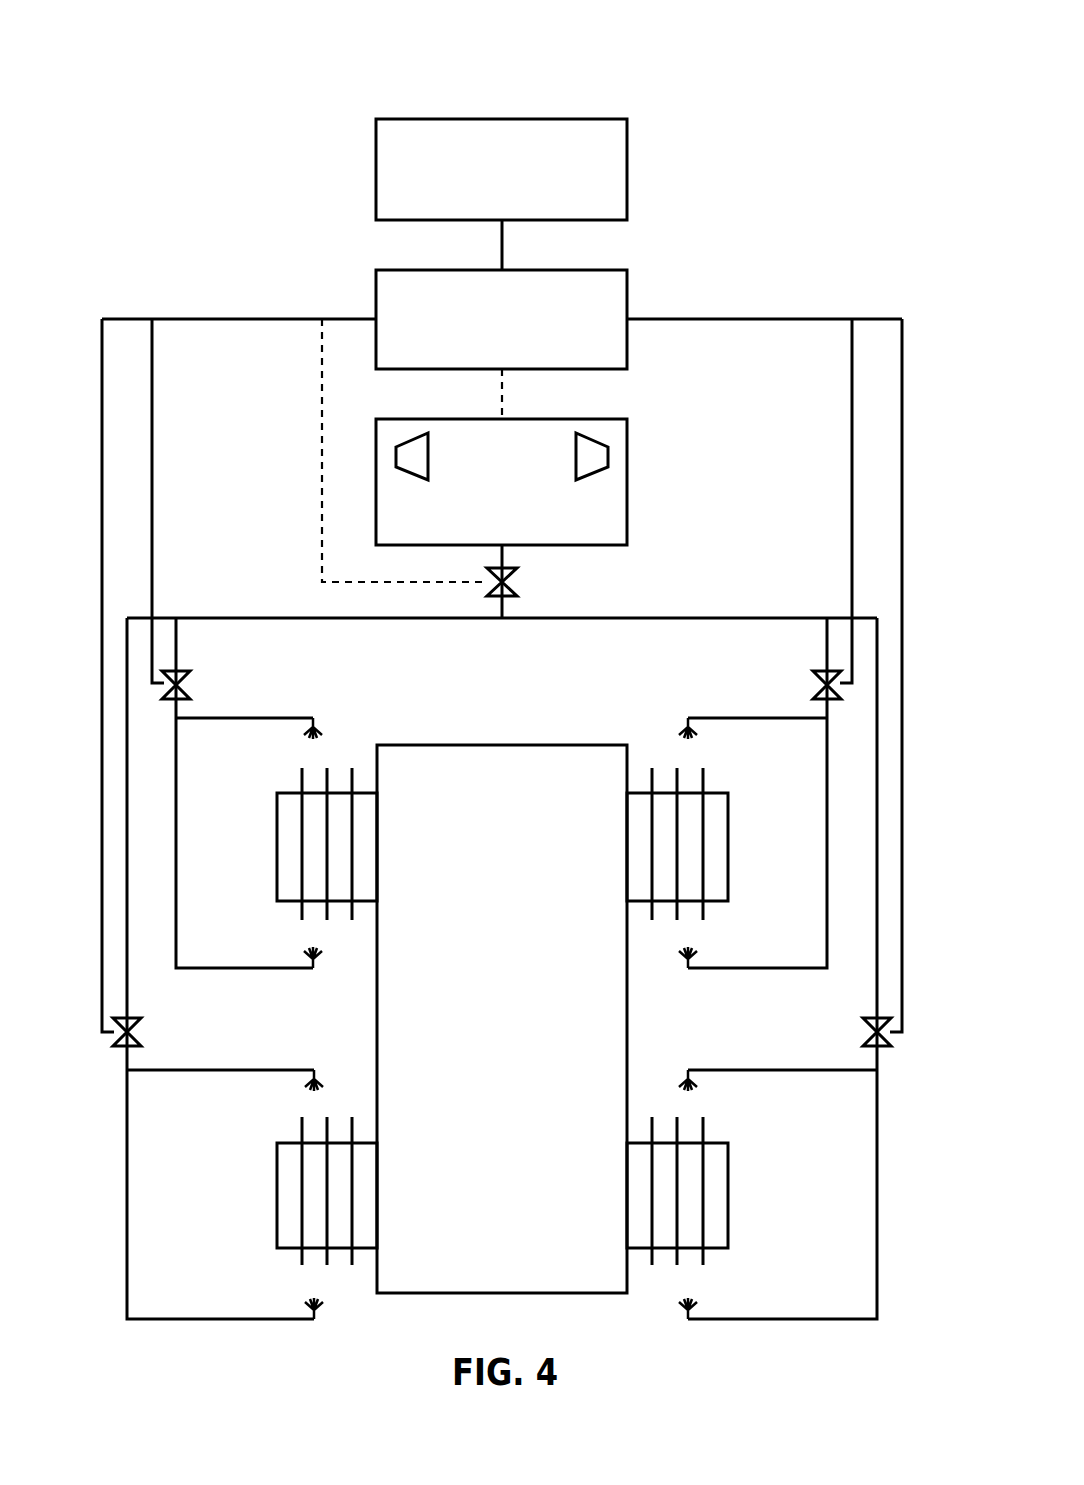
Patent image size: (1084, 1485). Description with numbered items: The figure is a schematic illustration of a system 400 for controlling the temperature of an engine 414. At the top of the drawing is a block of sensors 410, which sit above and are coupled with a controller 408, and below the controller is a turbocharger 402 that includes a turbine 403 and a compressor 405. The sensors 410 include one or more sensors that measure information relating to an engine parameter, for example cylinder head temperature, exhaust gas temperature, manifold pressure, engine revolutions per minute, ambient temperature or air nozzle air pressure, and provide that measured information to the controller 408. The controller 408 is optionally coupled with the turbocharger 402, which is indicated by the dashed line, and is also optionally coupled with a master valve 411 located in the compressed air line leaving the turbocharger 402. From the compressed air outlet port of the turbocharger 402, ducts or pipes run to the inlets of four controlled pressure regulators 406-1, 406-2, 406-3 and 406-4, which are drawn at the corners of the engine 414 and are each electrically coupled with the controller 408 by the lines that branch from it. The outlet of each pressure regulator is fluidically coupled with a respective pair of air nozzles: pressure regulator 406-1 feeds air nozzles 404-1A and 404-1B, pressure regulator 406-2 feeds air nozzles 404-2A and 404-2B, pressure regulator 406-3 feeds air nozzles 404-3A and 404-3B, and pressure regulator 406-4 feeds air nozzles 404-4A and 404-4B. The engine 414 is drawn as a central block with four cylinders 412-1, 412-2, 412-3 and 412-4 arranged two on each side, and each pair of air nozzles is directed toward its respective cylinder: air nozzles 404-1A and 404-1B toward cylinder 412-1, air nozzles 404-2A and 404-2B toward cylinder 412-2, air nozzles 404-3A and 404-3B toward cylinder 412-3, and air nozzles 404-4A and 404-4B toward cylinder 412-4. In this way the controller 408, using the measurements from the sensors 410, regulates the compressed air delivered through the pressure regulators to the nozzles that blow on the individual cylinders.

The system 400 is at (540, 88).
The turbocharger 402 is at (627, 460).
The turbine 403 is at (577, 457).
The air nozzle 404-1A is at (318, 725).
The air nozzle 404-1B is at (338, 972).
The air nozzle 404-2A is at (306, 1088).
The air nozzle 404-2B is at (306, 1304).
The air nozzle 404-3A is at (683, 730).
The air nozzle 404-3B is at (683, 952).
The air nozzle 404-4A is at (697, 1088).
The air nozzle 404-4B is at (698, 1305).
The compressor 405 is at (428, 455).
The controlled pressure regulator 406-1 is at (185, 681).
The controlled pressure regulator 406-2 is at (141, 1036).
The controlled pressure regulator 406-3 is at (816, 676).
The controlled pressure regulator 406-4 is at (866, 1041).
The controller 408 is at (627, 335).
The sensors 410 is at (627, 170).
The master valve 411 is at (512, 575).
The cylinder 412-1 is at (277, 815).
The cylinder 412-2 is at (277, 1172).
The cylinder 412-3 is at (728, 830).
The cylinder 412-4 is at (728, 1180).
The engine 414 is at (567, 1293).